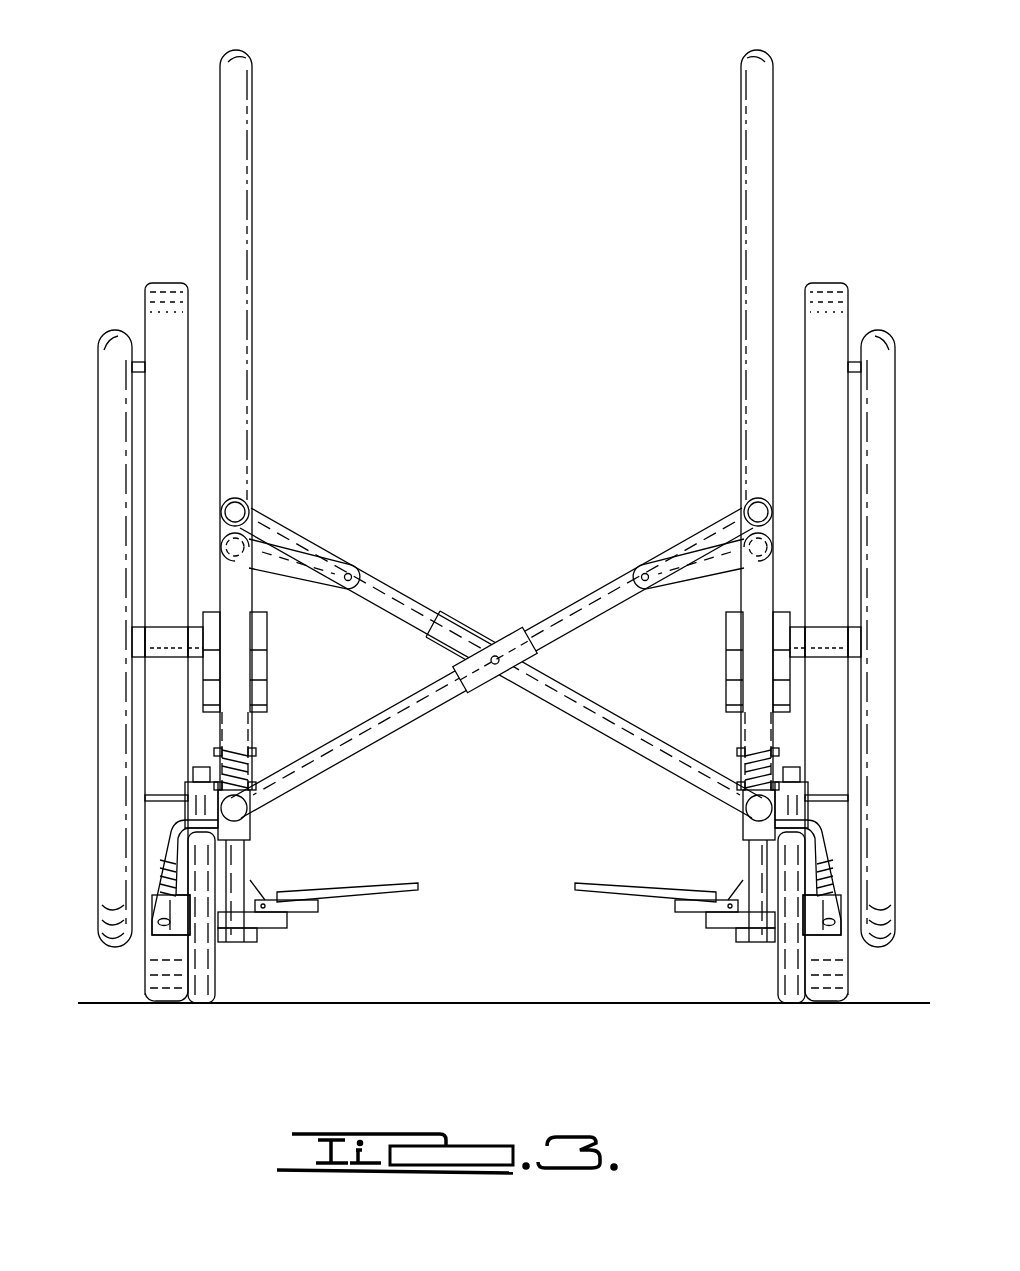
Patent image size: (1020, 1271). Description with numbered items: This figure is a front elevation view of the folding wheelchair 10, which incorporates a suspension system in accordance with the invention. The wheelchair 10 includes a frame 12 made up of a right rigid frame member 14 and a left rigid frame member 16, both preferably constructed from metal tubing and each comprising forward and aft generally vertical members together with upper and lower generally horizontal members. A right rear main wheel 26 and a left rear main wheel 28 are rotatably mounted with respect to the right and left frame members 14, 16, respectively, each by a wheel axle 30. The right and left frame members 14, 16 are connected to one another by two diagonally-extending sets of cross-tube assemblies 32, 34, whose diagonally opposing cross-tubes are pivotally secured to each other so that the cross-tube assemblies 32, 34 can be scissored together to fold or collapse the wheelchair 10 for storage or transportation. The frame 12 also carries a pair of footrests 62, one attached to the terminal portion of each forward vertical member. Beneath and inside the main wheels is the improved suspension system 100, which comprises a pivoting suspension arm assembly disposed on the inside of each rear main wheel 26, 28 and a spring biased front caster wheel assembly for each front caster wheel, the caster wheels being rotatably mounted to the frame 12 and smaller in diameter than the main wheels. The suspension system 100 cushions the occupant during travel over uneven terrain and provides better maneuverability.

The folding wheelchair 10 is at (119, 82).
The frame 12 is at (496, 637).
The right rigid frame member 14 is at (236, 406).
The left rigid frame member 16 is at (748, 268).
The right rear main wheel 26 is at (157, 293).
The left rear main wheel 28 is at (826, 297).
The wheel axle 30 is at (132, 635).
The cross-tube assembly 32 is at (573, 601).
The cross-tube assembly 34 is at (592, 722).
The footrest 62 is at (386, 895).
The suspension system 100 is at (312, 698).